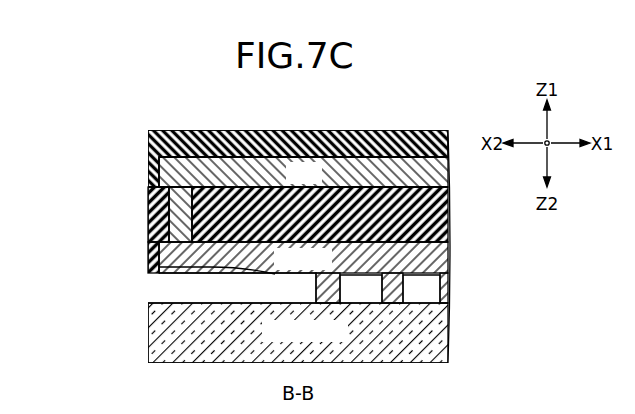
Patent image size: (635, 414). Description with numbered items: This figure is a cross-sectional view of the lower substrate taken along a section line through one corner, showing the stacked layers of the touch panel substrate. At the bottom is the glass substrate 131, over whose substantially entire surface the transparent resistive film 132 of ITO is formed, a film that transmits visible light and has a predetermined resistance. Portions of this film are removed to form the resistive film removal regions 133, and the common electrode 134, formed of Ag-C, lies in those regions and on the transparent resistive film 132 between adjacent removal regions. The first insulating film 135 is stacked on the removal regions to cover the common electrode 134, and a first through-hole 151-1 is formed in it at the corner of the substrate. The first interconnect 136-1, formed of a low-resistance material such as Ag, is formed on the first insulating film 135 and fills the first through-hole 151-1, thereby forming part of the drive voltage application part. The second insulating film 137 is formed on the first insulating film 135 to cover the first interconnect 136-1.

The glass substrate 131 is at (148, 325).
The transparent resistive film 132 is at (148, 285).
The first resistive film removal region 133 is at (330, 287).
The common electrode 134 is at (177, 253).
The first insulating film 135 is at (148, 195).
The first interconnect 136-1 is at (158, 167).
The second insulating film 137 is at (147, 137).
The first through-hole 151-1 is at (178, 185).